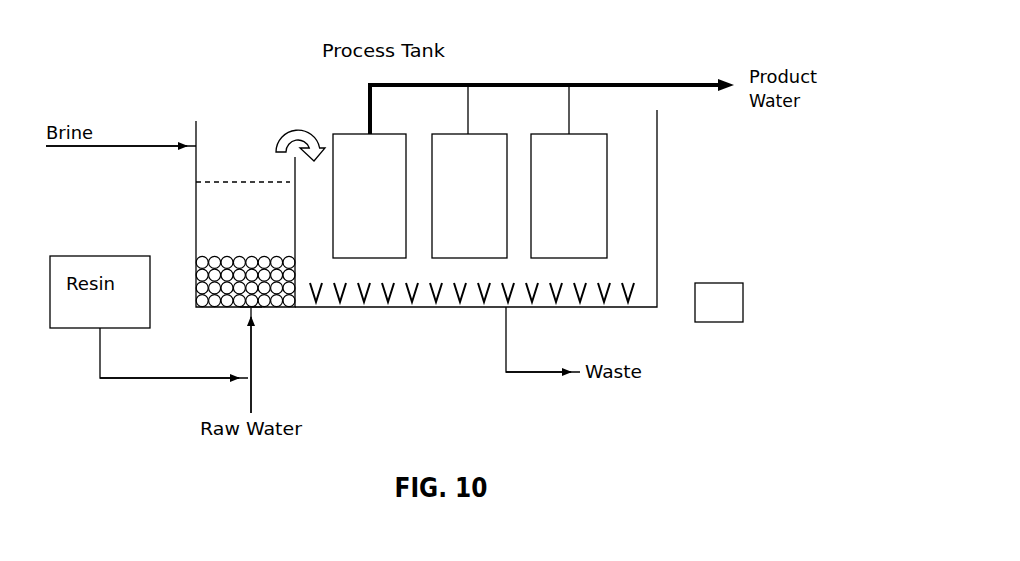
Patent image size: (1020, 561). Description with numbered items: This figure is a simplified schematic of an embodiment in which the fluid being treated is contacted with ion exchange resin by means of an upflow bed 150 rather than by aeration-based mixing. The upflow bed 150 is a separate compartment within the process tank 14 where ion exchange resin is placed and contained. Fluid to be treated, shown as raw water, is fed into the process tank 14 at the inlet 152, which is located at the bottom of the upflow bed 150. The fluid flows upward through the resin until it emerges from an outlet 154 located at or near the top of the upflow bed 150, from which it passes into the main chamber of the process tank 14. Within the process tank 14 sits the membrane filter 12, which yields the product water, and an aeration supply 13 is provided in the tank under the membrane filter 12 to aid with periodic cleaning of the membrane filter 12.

The upflow bed 150 is at (233, 219).
The inlet 152 is at (260, 313).
The outlet 154 is at (246, 157).
The membrane filter 12 is at (533, 168).
The aeration supply 13 is at (634, 295).
The process tank 14 is at (630, 184).